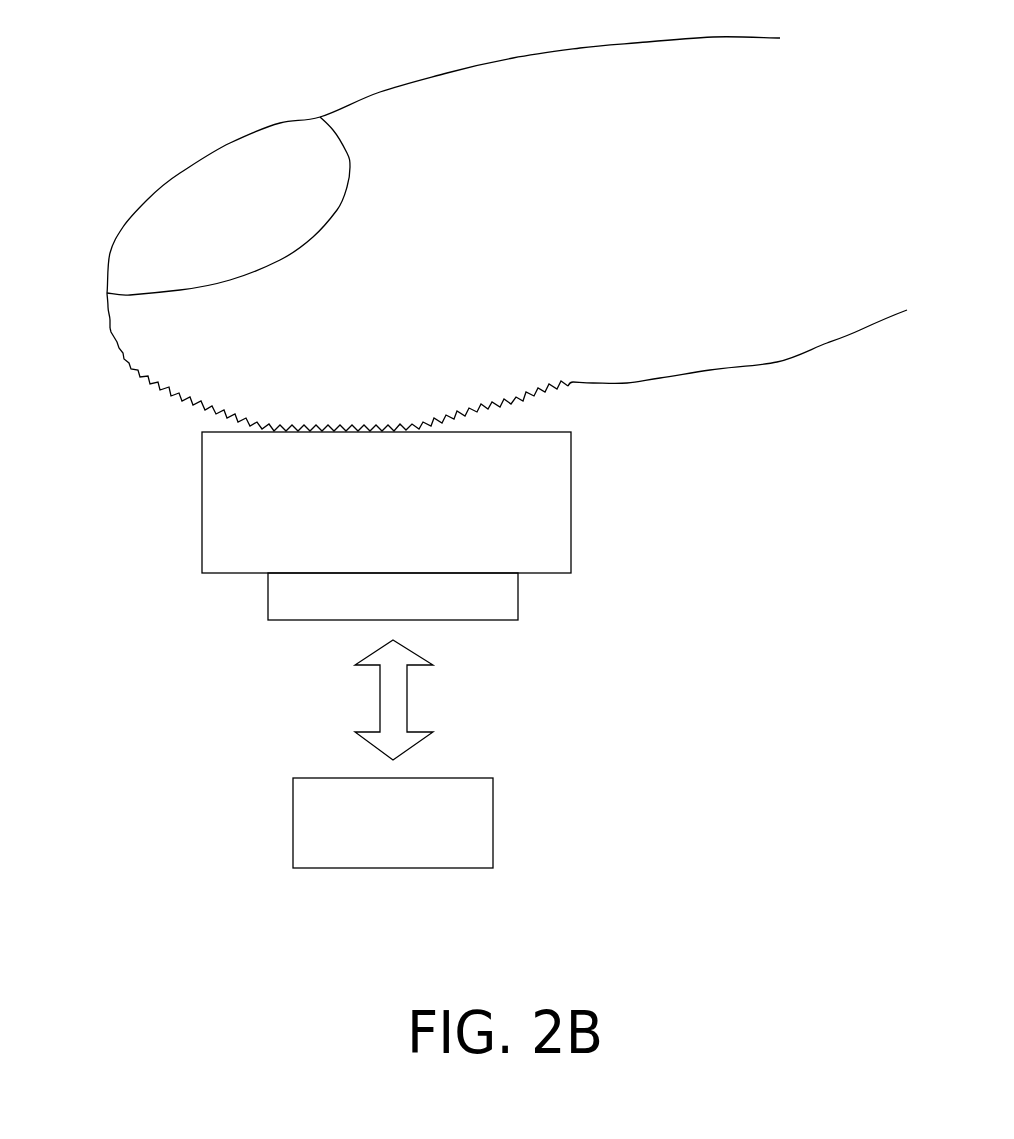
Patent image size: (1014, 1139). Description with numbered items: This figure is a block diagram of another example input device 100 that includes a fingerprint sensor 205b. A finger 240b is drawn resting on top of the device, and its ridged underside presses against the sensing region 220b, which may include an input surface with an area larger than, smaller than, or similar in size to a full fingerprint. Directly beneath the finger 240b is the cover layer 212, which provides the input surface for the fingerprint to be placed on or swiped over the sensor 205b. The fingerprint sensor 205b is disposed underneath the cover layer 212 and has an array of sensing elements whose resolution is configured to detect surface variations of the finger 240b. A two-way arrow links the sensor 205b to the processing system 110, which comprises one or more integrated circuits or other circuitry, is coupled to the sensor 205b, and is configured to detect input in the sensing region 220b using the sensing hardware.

The input device 100 is at (128, 58).
The sensing region 220b is at (153, 410).
The finger 240b is at (777, 362).
The cover layer 212 is at (572, 520).
The fingerprint sensor 205b is at (518, 608).
The processing system 110 is at (293, 830).